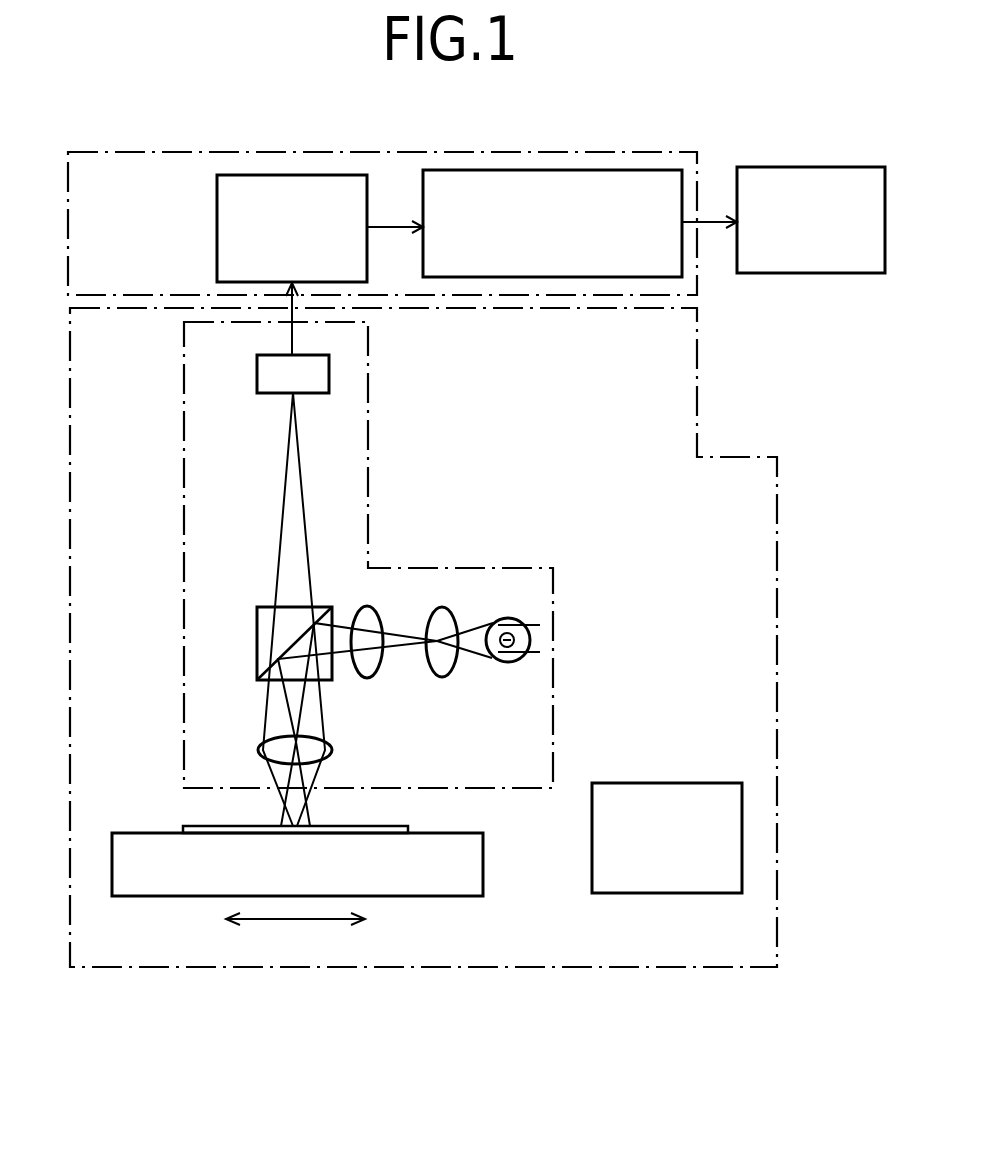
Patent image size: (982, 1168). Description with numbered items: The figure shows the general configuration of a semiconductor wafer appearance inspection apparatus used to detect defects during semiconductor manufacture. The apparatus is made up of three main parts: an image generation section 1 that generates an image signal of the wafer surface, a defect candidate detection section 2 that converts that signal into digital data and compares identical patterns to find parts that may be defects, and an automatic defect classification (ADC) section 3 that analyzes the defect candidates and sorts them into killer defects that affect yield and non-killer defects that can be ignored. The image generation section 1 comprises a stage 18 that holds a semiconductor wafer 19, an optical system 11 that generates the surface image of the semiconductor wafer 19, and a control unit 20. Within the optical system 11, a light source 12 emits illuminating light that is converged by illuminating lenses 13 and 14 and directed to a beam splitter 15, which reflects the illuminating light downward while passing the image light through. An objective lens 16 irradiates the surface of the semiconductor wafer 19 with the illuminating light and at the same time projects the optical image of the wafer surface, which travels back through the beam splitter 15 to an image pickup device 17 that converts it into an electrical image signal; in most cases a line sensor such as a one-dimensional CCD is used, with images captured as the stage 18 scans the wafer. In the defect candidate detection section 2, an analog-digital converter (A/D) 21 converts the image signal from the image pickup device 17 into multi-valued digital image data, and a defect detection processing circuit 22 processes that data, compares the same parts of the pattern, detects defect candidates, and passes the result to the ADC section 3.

The image generation section 1 is at (777, 518).
The defect candidate detection section 2 is at (627, 141).
The automatic defect classification (ADC) section 3 is at (813, 166).
The optical system 11 is at (368, 480).
The light source 12 is at (500, 616).
The illuminating lens 13 is at (450, 612).
The illuminating lens 14 is at (380, 614).
The beam splitter 15 is at (257, 626).
The objective lens 16 is at (332, 752).
The image pickup device 17 is at (257, 372).
The stage 18 is at (485, 875).
The semiconductor wafer 19 is at (410, 826).
The control unit 20 is at (676, 783).
The analog-digital converter (A/D) 21 is at (217, 228).
The defect detection processing circuit 22 is at (422, 216).